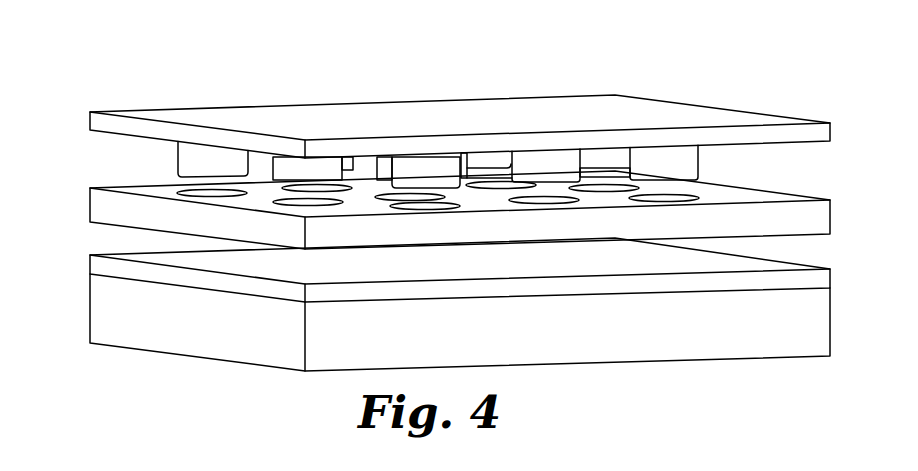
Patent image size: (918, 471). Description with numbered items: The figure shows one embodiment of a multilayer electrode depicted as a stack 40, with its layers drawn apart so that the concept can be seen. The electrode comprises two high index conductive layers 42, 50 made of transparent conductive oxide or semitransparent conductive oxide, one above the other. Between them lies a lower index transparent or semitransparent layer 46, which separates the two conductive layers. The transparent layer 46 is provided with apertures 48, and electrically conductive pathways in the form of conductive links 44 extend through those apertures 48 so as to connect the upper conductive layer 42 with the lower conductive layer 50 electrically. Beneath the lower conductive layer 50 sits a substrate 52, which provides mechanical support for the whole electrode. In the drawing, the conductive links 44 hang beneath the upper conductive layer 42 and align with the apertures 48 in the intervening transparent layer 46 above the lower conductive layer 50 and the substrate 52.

The stack 40 is at (286, 79).
The high index conductive layer 42 is at (100, 122).
The conductive link 44 is at (193, 158).
The transparent layer 46 is at (102, 204).
The aperture 48 is at (698, 198).
The high index conductive layer 50 is at (102, 263).
The substrate 52 is at (102, 312).